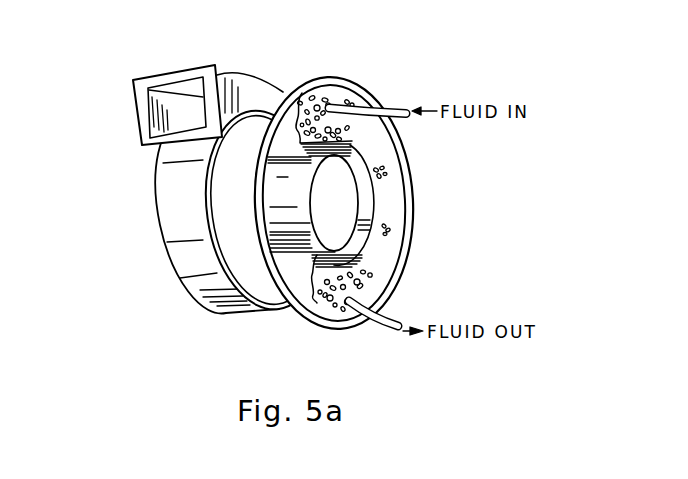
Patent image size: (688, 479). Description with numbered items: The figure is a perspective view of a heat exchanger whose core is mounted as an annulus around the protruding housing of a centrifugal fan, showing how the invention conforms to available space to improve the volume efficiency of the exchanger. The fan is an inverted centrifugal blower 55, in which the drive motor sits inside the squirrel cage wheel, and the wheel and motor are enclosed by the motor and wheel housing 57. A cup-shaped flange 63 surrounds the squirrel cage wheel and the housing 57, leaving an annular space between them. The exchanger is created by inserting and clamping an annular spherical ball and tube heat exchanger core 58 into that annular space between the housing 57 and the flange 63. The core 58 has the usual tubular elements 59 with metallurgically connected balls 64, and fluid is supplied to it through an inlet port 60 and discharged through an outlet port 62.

The inverted centrifugal blower 55 is at (252, 70).
The motor and wheel housing 57 is at (323, 189).
The annular spherical ball and tube heat exchanger core 58 is at (386, 255).
The tubular elements 59 is at (332, 93).
The inlet port 60 is at (398, 120).
The outlet port 62 is at (370, 321).
The cup-shaped flange 63 is at (297, 96).
The metallurgically connected balls 64 is at (400, 157).